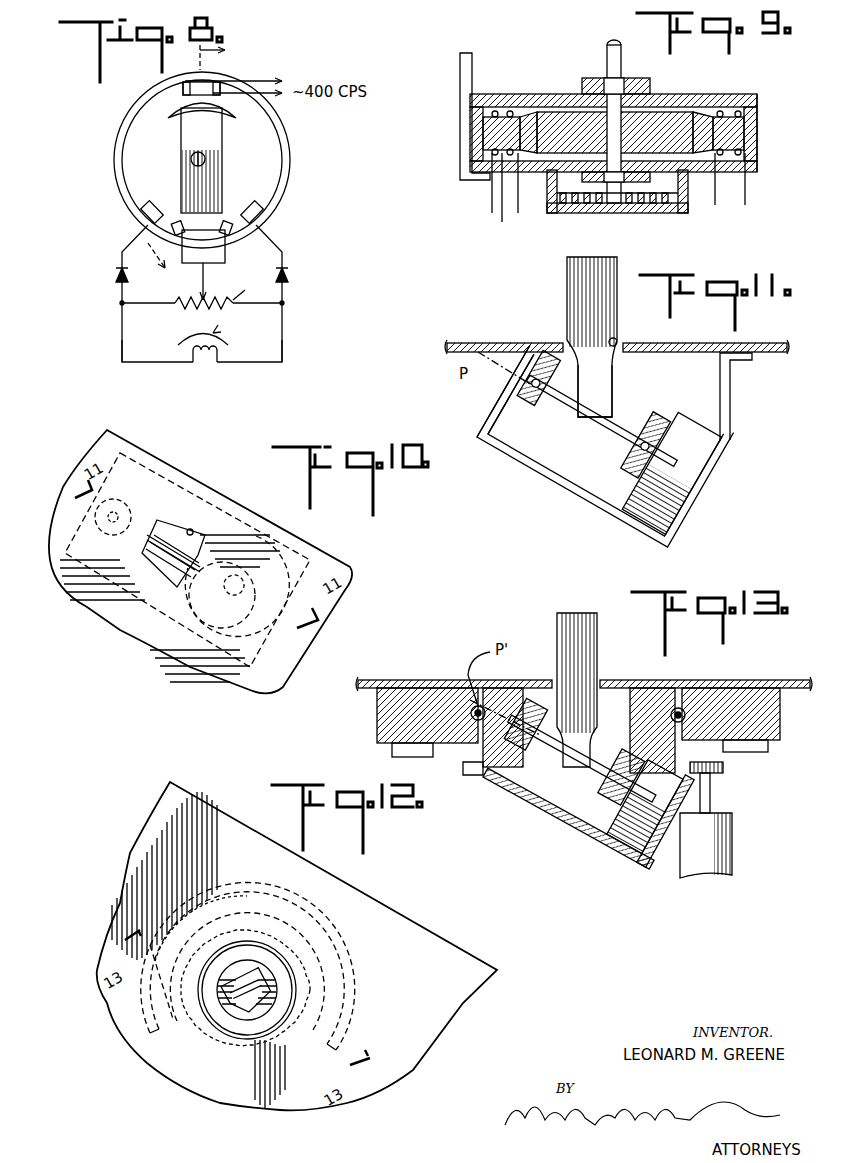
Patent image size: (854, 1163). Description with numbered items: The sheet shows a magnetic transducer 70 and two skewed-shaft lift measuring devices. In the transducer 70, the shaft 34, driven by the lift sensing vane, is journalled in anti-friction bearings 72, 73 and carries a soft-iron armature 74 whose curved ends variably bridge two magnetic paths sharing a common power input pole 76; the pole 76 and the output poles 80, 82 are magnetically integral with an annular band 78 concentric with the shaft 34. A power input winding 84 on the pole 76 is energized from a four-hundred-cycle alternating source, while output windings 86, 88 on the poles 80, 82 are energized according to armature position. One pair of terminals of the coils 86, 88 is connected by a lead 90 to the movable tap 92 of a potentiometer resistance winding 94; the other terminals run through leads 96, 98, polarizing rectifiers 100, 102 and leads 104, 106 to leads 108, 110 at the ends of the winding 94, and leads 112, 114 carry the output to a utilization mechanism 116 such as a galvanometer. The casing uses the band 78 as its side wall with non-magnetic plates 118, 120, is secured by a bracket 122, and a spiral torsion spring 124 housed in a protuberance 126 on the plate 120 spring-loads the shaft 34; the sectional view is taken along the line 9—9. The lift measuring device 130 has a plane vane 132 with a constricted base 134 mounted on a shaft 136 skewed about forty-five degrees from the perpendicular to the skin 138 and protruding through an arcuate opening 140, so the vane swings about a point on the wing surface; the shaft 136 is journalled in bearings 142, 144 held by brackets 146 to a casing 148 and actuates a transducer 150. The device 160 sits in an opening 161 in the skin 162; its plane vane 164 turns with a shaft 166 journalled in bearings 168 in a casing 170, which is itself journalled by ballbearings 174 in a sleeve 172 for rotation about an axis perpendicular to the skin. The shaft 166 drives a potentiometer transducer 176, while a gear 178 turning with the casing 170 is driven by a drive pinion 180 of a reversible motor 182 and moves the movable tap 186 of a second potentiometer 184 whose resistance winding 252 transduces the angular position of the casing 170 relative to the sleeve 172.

In FIG. 8, the section line 9— 9 is at (194, 165).
In FIG. 8, the shaft 34 is at (195, 159).
In FIG. 9, the shaft 34 is at (620, 62).
In FIG. 8, the transducer 70 is at (290, 185).
In FIG. 9, the transducer 70 is at (475, 190).
In FIG. 9, the anti-friction bearing 72 is at (650, 84).
In FIG. 9, the anti-friction bearing 73 is at (634, 184).
In FIG. 8, the armature 74 is at (185, 137).
In FIG. 9, the armature 74 is at (680, 112).
In FIG. 8, the common magnetic pole 76 is at (175, 107).
In FIG. 9, the common magnetic pole 76 is at (705, 118).
In FIG. 8, the annular band 78 is at (283, 133).
In FIG. 9, the annular band 78 is at (757, 105).
In FIG. 8, the second magnetic pole 80 is at (160, 200).
In FIG. 9, the second magnetic pole 80 is at (558, 92).
In FIG. 8, the second magnetic pole 82 is at (248, 200).
In FIG. 8, the power input winding 84 is at (187, 85).
In FIG. 8, the output winding 86 is at (202, 230).
In FIG. 8, the output winding 88 is at (250, 230).
In FIG. 8, the lead 90 is at (203, 300).
In FIG. 8, the movable tap 92 is at (206, 295).
In FIG. 8, the potentiometer resistance winding 94 is at (250, 288).
In FIG. 8, the lead 96 is at (132, 235).
In FIG. 8, the lead 98 is at (280, 242).
In FIG. 8, the polarizing rectifier 100 is at (116, 276).
In FIG. 8, the polarizing rectifier 102 is at (288, 276).
In FIG. 8, the lead 104 is at (122, 296).
In FIG. 8, the lead 106 is at (282, 293).
In FIG. 8, the lead 108 is at (170, 307).
In FIG. 8, the lead 110 is at (272, 305).
In FIG. 8, the lead 112 is at (122, 352).
In FIG. 8, the lead 114 is at (282, 347).
In FIG. 8, the utilization mechanism 116 is at (217, 353).
In FIG. 9, the non-magnetic plate 118 is at (527, 78).
In FIG. 9, the non-magnetic plate 120 is at (611, 176).
In FIG. 9, the bracket 122 is at (462, 75).
In FIG. 9, the spiral torsion spring 124 is at (578, 210).
In FIG. 9, the protuberance 126 is at (553, 213).
In FIG. 11, the lift measuring device 130 is at (540, 331).
In FIG. 11, the plane vane 132 is at (572, 298).
In FIG. 10, the plane vane 132 is at (157, 543).
In FIG. 11, the constricted base 134 is at (614, 378).
In FIG. 11, the shaft 136 is at (595, 413).
In FIG. 10, the shaft 136 is at (207, 580).
In FIG. 11, the skin 138 is at (685, 345).
In FIG. 11, the arcuate opening 140 is at (617, 340).
In FIG. 10, the arcuate opening 140 is at (190, 532).
In FIG. 11, the anti-friction bearing 142 is at (523, 397).
In FIG. 10, the anti-friction bearing 142 is at (137, 512).
In FIG. 11, the anti-friction bearing 144 is at (663, 420).
In FIG. 10, the anti-friction bearing 144 is at (243, 523).
In FIG. 11, the bracket 146 is at (507, 428).
In FIG. 11, the casing 148 is at (530, 475).
In FIG. 11, the transducer 150 is at (710, 442).
In FIG. 10, the transducer 150 is at (297, 538).
In FIG. 13, the lift measuring device 160 is at (611, 654).
In FIG. 13, the opening 161 is at (722, 680).
In FIG. 13, the skin 162 is at (795, 680).
In FIG. 13, the plane vane 164 is at (558, 622).
In FIG. 12, the plane vane 164 is at (225, 1010).
In FIG. 13, the shaft 166 is at (572, 752).
In FIG. 12, the shaft 166 is at (245, 1030).
In FIG. 13, the bearing 168 is at (522, 740).
In FIG. 13, the casing 170 is at (638, 735).
In FIG. 12, the casing 170 is at (275, 1028).
In FIG. 13, the sleeve 172 is at (443, 680).
In FIG. 13, the ballbearing 174 is at (680, 708).
In FIG. 13, the transducer 176 is at (668, 832).
In FIG. 13, the gear 178 is at (478, 778).
In FIG. 12, the gear 178 is at (200, 1005).
In FIG. 13, the drive pinion 180 is at (723, 768).
In FIG. 13, the reversible motor 182 is at (732, 820).
In FIG. 13, the second potentiometer 184 is at (768, 748).
In FIG. 12, the second potentiometer 184 is at (238, 893).
In FIG. 12, the movable tap 186 is at (290, 905).
In FIG. 12, the resistance winding 252 is at (340, 945).